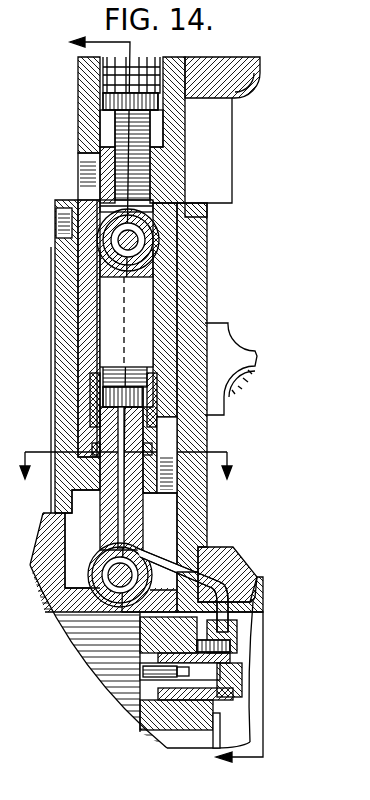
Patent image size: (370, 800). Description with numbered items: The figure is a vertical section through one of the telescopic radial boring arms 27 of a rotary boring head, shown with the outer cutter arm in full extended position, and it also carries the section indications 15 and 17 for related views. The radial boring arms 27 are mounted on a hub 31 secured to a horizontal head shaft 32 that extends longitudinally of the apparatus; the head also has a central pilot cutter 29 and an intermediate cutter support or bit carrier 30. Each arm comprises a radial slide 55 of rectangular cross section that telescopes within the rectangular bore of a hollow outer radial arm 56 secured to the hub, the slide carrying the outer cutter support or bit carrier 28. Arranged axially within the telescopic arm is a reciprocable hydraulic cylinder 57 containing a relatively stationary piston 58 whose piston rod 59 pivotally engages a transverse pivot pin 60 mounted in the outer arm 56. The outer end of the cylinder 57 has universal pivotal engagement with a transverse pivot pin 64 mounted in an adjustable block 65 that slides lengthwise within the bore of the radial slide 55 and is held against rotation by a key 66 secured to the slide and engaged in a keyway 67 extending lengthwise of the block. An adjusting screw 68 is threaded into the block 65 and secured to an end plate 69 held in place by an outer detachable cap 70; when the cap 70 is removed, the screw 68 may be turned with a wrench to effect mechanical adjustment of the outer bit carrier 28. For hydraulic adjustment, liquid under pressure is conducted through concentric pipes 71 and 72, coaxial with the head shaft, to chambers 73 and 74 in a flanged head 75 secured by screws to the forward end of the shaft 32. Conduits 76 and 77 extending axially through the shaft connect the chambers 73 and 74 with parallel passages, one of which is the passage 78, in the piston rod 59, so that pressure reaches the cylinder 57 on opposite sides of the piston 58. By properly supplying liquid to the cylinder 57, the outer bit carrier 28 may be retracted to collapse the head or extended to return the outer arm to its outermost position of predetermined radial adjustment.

The section line 15- 15 is at (153, 402).
The section line 17- 17 is at (126, 476).
The telescopic radial boring arm 27 is at (63, 243).
The outer cutter support 28 is at (260, 62).
The central pilot cutter 29 is at (120, 573).
The intermediate cutter support 30 is at (257, 357).
The hub 31 is at (44, 602).
The horizontal shaft 32 is at (97, 632).
The radial slide 55 is at (87, 297).
The outer radial arm 56 is at (192, 303).
The hydraulic cylinder 57 is at (97, 340).
The piston 58 is at (147, 372).
The piston rod 59 is at (133, 433).
The transverse pivot pin 60 is at (133, 563).
The transverse pivot pin 64 is at (160, 236).
The adjustable block 65 is at (170, 182).
The key 66 is at (97, 168).
The keyway 67 is at (97, 193).
The adjusting screw 68 is at (152, 145).
The end plate 69 is at (150, 66).
The detachable cap 70 is at (113, 62).
The concentric pipe 71 is at (145, 670).
The concentric pipe 72 is at (155, 680).
The chamber 73 is at (207, 672).
The chamber 74 is at (170, 697).
The flanged head 75 is at (222, 633).
The conduit 76 is at (253, 601).
The conduit 77 is at (223, 728).
The passage 78 is at (120, 513).